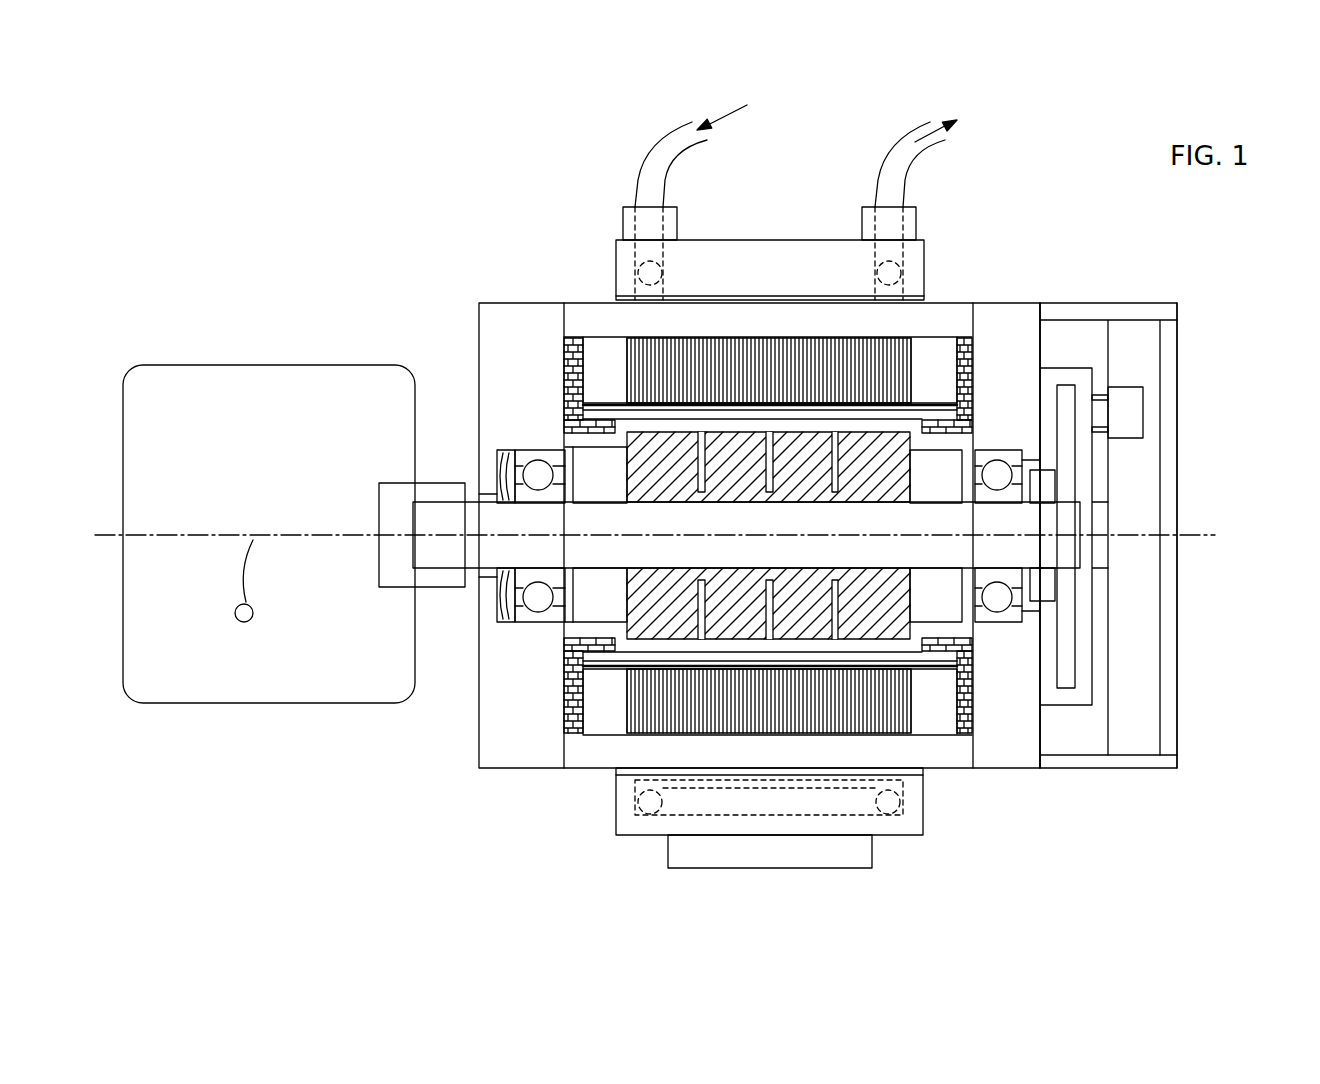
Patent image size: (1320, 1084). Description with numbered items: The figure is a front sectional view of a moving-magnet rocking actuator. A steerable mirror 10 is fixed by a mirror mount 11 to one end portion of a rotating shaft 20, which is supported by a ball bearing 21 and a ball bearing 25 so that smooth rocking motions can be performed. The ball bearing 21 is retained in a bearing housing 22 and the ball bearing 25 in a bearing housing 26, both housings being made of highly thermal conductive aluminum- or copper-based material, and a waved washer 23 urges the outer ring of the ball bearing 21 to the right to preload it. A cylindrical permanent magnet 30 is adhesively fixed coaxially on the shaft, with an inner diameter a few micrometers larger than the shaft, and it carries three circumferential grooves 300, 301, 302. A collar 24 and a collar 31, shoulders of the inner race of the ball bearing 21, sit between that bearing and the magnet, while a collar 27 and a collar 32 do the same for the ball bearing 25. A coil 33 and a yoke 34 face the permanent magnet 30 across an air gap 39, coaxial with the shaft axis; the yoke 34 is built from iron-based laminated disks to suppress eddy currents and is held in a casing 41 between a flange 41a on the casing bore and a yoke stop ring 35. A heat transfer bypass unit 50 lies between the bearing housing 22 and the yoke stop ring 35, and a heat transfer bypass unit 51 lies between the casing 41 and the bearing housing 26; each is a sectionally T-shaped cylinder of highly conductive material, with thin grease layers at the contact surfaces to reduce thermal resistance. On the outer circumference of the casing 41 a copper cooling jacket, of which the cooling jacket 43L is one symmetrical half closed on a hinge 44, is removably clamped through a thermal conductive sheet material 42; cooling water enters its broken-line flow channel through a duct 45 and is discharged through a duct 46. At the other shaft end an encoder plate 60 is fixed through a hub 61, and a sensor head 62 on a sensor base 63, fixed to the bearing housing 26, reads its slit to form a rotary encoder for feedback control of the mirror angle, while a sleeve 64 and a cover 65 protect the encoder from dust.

The steerable mirror 10 is at (243, 375).
The mirror mount 11 is at (427, 490).
The rotating shaft 20 is at (425, 572).
The ball bearing 21 is at (524, 455).
The bearing housing 22 is at (502, 755).
The waved washer 23 is at (505, 622).
The collar 24 is at (572, 575).
The ball bearing 25 is at (1040, 390).
The bearing housing 26 is at (1030, 770).
The collar 27 is at (967, 580).
The permanent magnet 30 is at (742, 440).
The collar 31 is at (600, 608).
The collar 32 is at (940, 608).
The coil 33 is at (818, 405).
The yoke 34 is at (722, 342).
The yoke stop ring 35 is at (600, 345).
The air gap 39 is at (884, 645).
The casing 41 is at (937, 323).
The flange 41a is at (976, 352).
The thermal conductive sheet material 42 is at (928, 297).
The cooling jacket 43L is at (925, 247).
The hinge 44 is at (862, 855).
The duct 45 is at (662, 153).
The duct 46 is at (907, 145).
The heat transfer bypass unit 50 is at (565, 355).
The heat transfer bypass unit 51 is at (1010, 453).
The encoder plate 60 is at (1067, 638).
The hub 61 is at (1047, 588).
The sensor head 62 is at (1133, 405).
The sensor base 63 is at (1100, 460).
The sleeve 64 is at (1133, 768).
The cover 65 is at (1168, 720).
The circumferential groove 300 is at (701, 640).
The circumferential groove 301 is at (769, 640).
The circumferential groove 302 is at (835, 640).